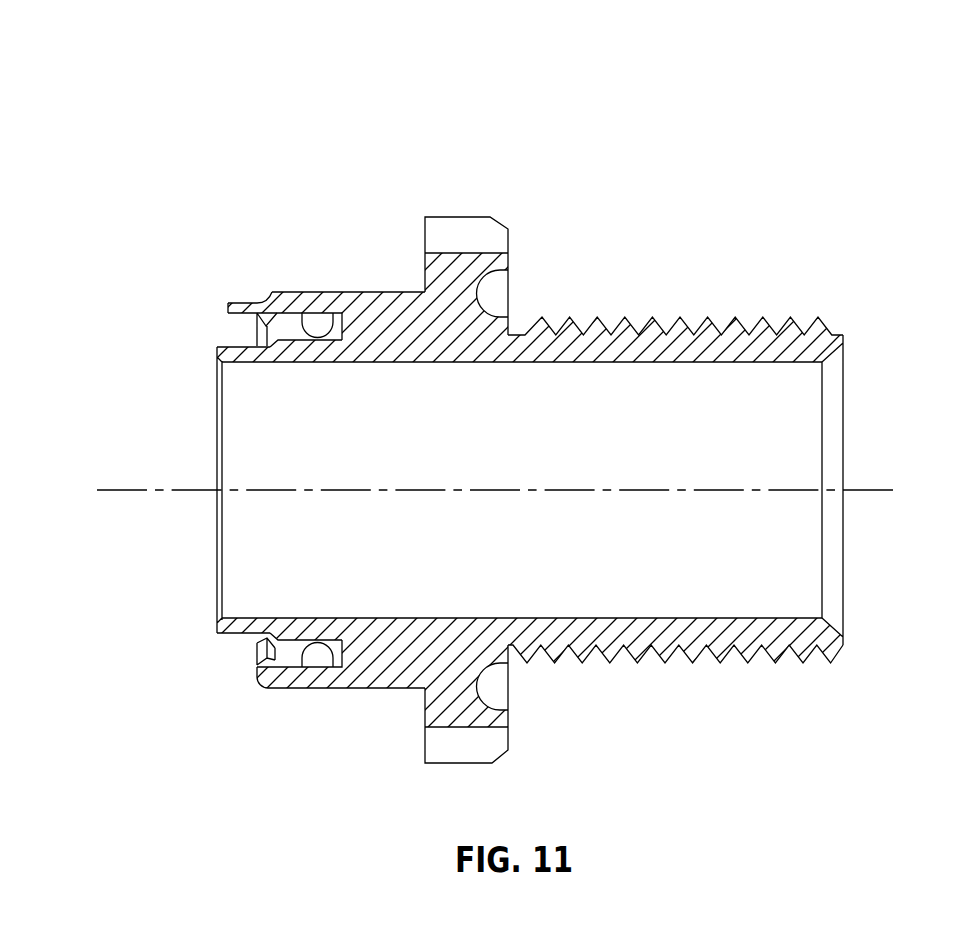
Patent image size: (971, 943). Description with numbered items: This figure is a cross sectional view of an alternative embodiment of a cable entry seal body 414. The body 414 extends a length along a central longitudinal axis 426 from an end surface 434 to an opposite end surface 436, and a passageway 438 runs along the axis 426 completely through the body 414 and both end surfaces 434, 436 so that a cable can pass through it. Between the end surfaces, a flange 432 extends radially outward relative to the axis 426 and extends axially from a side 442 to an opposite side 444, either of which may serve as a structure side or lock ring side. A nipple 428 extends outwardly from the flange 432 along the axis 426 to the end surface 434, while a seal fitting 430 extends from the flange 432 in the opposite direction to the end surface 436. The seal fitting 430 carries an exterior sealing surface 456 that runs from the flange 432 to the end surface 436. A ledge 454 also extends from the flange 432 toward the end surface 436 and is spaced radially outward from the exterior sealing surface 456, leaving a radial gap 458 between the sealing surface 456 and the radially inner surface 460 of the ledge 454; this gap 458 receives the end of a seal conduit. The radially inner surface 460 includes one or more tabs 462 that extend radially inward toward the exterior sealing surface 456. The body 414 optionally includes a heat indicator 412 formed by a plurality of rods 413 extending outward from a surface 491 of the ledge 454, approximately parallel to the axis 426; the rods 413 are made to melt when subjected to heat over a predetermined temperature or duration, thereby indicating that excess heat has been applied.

The cable entry seal body 414 is at (692, 103).
The central longitudinal axis 426 is at (127, 489).
The nipple 428 is at (689, 306).
The seal fitting 430 is at (237, 344).
The flange 432 is at (512, 740).
The end surface 434 is at (843, 633).
The end surface 436 is at (217, 348).
The passageway 438 is at (812, 414).
The side of flange 442 is at (522, 228).
The side of flange 444 is at (400, 243).
The ledge 454 is at (256, 290).
The exterior sealing surface 456 is at (227, 636).
The radial gap 458 is at (312, 314).
The radially inner surface 460 is at (306, 316).
The tab 462 is at (262, 654).
The heat indicator 412 is at (225, 301).
The rod 413 is at (227, 307).
The surface of ledge 491 is at (256, 666).